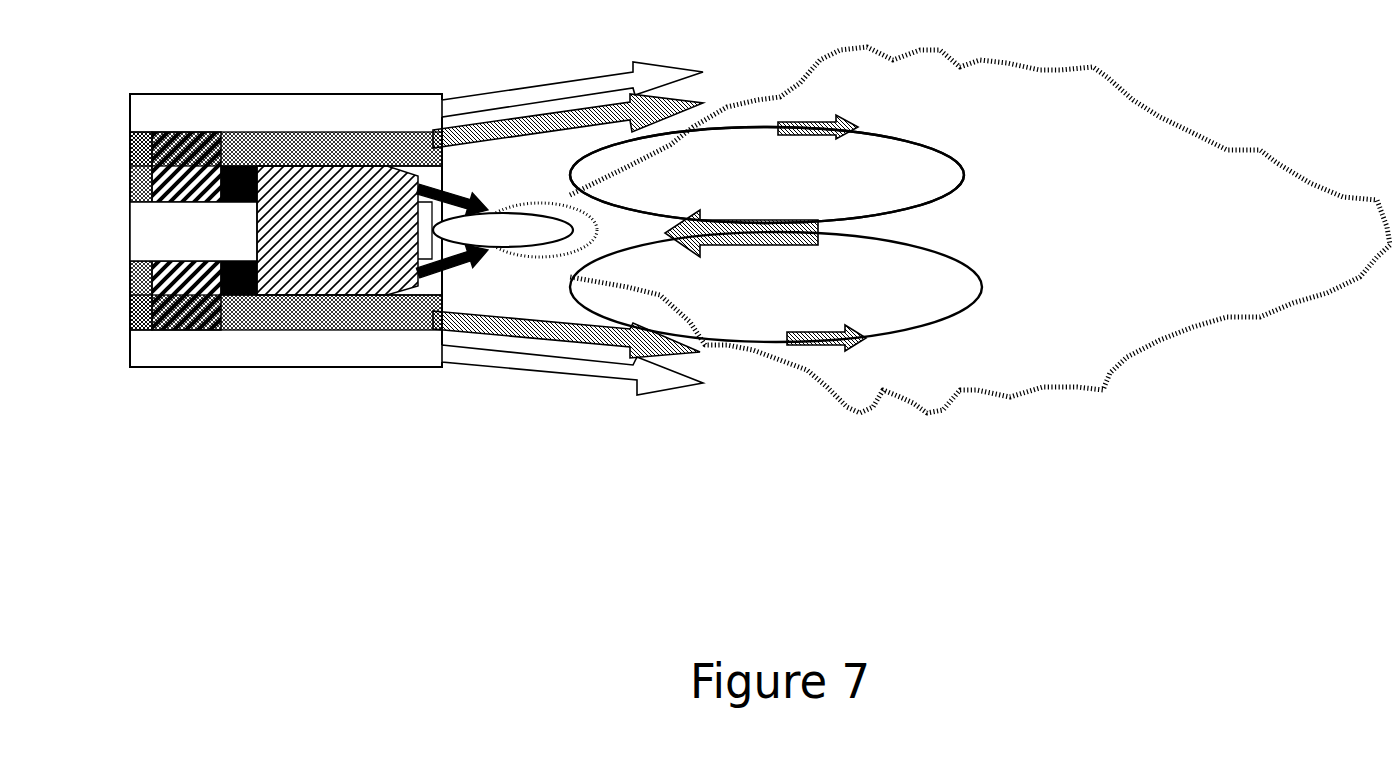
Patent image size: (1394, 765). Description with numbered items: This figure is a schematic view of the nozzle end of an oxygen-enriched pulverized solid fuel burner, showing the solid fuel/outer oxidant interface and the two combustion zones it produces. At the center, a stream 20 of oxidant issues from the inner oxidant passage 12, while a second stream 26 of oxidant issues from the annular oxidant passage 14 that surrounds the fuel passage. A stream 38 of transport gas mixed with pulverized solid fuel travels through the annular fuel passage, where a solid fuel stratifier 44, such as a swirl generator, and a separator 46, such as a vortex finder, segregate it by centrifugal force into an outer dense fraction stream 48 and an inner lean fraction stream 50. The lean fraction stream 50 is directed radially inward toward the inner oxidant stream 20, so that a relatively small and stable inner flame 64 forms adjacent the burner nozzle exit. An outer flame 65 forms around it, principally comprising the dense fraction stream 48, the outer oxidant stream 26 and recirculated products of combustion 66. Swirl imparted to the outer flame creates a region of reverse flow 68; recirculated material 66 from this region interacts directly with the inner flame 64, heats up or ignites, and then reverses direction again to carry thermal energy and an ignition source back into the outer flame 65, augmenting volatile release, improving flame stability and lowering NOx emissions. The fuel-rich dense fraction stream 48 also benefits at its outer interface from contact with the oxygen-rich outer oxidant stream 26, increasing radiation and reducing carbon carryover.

The inner oxidant passage 12 is at (150, 233).
The annular oxidant passage 14 is at (150, 112).
The stream of oxidant 20 is at (446, 203).
The stream of oxidant 26 is at (491, 98).
The stream of a mixture of transport gas and solid fuel 38 is at (130, 305).
The solid fuel stratifier 44 is at (188, 152).
The separator 46 is at (318, 183).
The outer dense fraction stream 48 is at (530, 340).
The inner lean fraction stream 50 is at (455, 263).
The inner flame 64 is at (516, 203).
The outer flame 65 is at (860, 416).
The recirculated products of combustion 66 is at (630, 207).
The region of reverse flow 68 is at (749, 158).